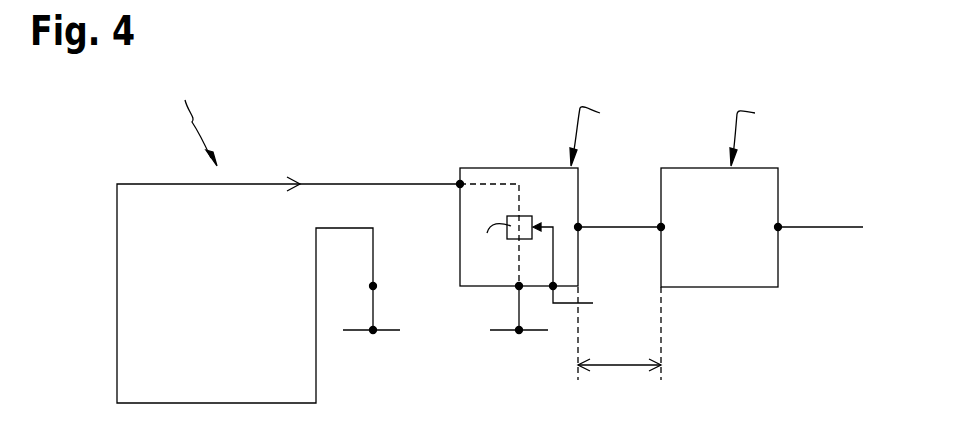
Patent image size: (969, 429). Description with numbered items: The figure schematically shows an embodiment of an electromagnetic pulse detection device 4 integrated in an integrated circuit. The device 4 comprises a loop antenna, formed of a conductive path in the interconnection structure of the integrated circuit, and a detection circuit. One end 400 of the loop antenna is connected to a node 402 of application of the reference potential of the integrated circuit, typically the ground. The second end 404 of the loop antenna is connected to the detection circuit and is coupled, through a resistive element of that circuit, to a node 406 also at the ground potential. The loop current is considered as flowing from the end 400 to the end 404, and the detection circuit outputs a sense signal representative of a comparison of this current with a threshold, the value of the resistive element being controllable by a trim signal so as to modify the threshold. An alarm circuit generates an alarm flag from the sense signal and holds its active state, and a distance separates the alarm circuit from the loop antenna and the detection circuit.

The electromagnetic pulse detection device 4 is at (80, 166).
The end of antenna 400 is at (375, 286).
The node of application of reference potential 402 is at (375, 330).
The second end of antenna 404 is at (458, 183).
The node of application of potential GND 406 is at (517, 328).